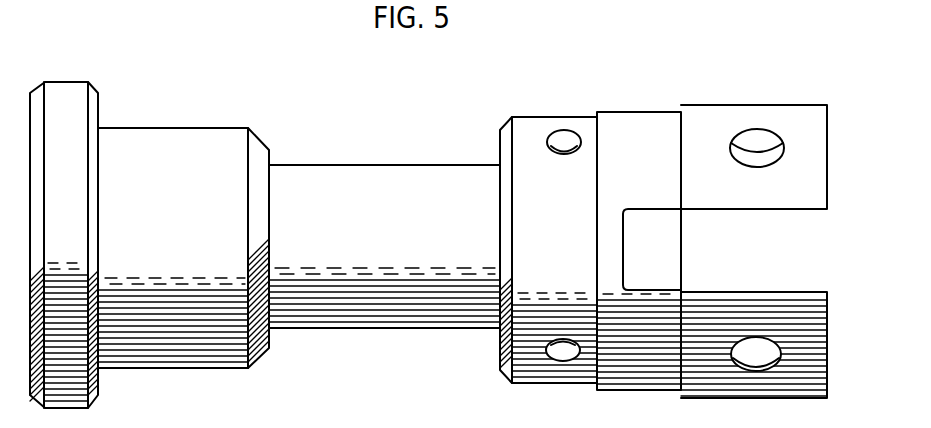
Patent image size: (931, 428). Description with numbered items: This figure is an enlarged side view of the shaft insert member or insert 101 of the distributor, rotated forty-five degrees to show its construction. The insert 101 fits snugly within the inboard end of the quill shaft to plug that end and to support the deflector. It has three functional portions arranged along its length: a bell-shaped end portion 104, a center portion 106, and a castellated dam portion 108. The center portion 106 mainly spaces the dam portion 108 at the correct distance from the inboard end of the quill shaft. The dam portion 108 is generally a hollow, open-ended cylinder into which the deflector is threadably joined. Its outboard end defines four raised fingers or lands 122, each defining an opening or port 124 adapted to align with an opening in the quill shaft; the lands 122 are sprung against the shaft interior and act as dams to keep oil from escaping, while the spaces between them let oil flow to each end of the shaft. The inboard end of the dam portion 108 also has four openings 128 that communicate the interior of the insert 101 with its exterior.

The insert 101 is at (432, 228).
The bell-shaped end portion 104 is at (177, 221).
The center portion 106 is at (396, 232).
The castellated dam portion 108 is at (637, 123).
The lands 122 is at (758, 223).
The port 124 is at (753, 130).
The openings 128 is at (565, 137).